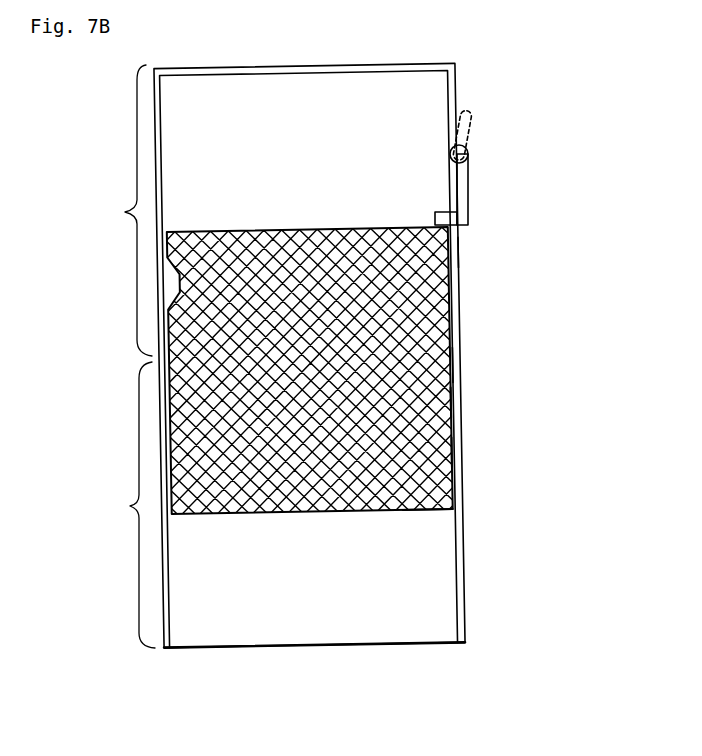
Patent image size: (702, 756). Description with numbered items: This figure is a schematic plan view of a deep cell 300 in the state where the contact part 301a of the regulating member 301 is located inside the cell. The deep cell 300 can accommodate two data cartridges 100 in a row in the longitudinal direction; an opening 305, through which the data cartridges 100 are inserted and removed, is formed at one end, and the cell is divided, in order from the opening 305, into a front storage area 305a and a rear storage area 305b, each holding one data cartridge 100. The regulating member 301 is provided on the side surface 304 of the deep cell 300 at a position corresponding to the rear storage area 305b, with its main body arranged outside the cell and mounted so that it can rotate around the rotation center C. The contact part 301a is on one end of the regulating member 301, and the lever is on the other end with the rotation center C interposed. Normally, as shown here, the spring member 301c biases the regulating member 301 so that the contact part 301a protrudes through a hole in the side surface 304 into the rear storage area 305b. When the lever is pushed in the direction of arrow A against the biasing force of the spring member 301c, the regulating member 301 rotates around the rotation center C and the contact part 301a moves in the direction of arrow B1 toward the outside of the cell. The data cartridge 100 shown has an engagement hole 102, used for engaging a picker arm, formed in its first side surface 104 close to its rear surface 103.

The data cartridge 100 is at (430, 313).
The engagement hole 102 is at (440, 457).
The rear surface 103 is at (420, 513).
The first side surface 104 is at (445, 405).
The deep cell 300 is at (458, 253).
The regulating member 301 is at (463, 214).
The contact part 301a is at (445, 212).
The spring member 301c is at (477, 130).
The side surface 304 is at (462, 368).
The opening 305 is at (362, 657).
The front storage area 305a is at (107, 505).
The rear storage area 305b is at (105, 210).
The direction of arrow A is at (488, 103).
The direction of arrow B1 is at (473, 223).
The rotation center C is at (467, 154).